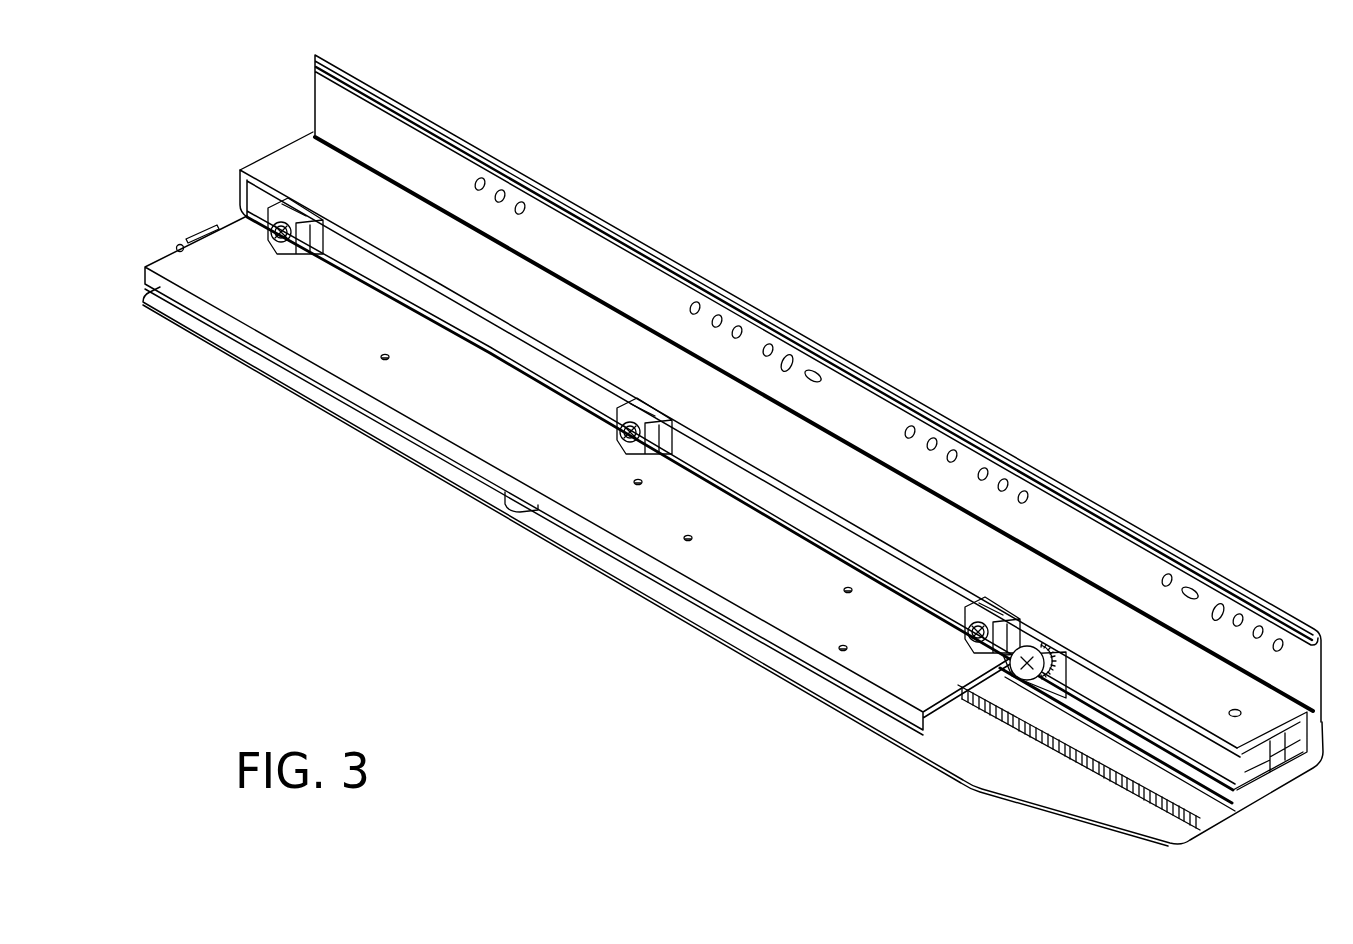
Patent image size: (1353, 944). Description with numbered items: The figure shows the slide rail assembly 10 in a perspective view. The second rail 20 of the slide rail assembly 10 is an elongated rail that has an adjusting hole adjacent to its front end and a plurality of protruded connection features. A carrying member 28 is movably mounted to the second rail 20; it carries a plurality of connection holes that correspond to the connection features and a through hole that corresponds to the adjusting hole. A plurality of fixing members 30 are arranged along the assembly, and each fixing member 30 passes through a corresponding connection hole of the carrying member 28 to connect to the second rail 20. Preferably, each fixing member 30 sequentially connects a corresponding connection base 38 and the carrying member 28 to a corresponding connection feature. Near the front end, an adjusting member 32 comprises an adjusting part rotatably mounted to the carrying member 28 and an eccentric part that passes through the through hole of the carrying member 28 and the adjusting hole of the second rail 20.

The slide rail assembly 10 is at (662, 212).
The second rail 20 is at (895, 505).
The carrying member 28 is at (790, 612).
The fixing members 30 is at (274, 240).
The adjusting member 32 is at (1028, 681).
The connection bases 38 is at (645, 458).